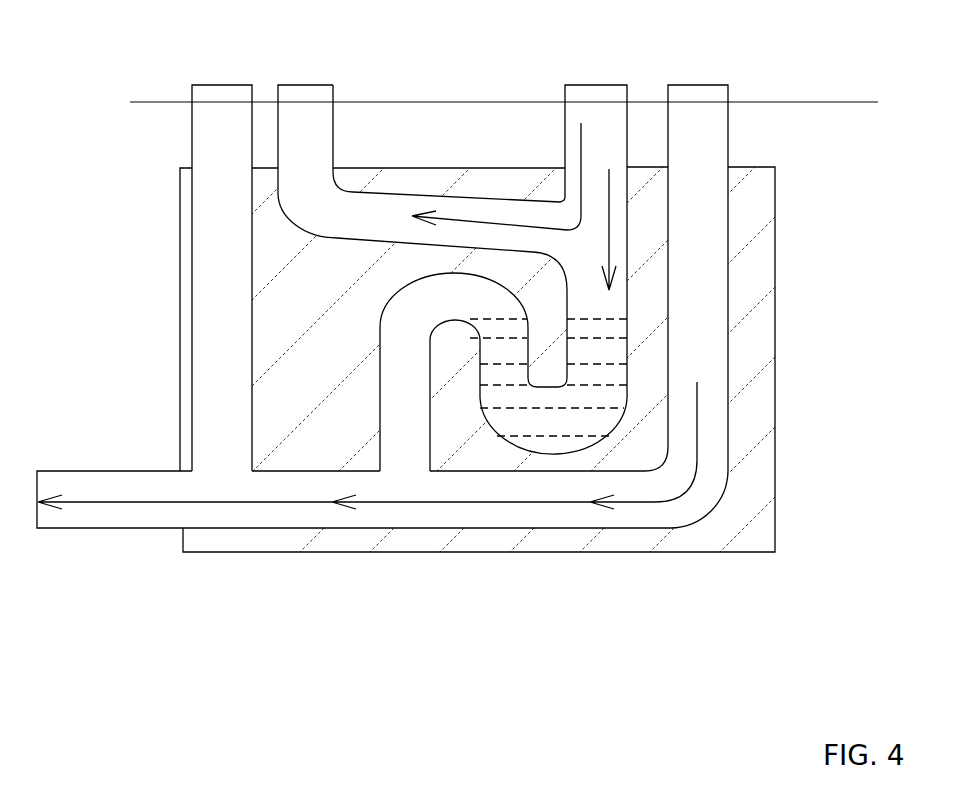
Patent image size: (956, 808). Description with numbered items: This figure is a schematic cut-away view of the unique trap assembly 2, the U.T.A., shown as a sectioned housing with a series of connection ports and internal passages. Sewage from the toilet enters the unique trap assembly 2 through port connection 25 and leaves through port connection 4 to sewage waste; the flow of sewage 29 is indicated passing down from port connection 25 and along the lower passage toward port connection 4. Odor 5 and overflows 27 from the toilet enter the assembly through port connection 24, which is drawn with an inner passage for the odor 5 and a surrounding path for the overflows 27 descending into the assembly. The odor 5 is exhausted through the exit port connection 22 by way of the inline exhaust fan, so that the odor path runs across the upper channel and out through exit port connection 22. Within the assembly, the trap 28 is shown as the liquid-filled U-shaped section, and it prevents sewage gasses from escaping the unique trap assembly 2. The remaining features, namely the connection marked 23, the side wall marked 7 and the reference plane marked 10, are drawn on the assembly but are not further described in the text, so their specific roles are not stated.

The unique trap assembly 2 is at (801, 305).
The port connection 4 is at (51, 447).
The odor 5 is at (608, 152).
The housing side wall 7 is at (166, 147).
The mounting plane 10 is at (832, 77).
The exit port connection 22 is at (193, 63).
The second connection tube 23 is at (332, 61).
The port connection 24 is at (574, 62).
The port connection 25 is at (724, 61).
The overflows 27 is at (635, 209).
The trap 28 is at (622, 369).
The sewage 29 is at (723, 420).